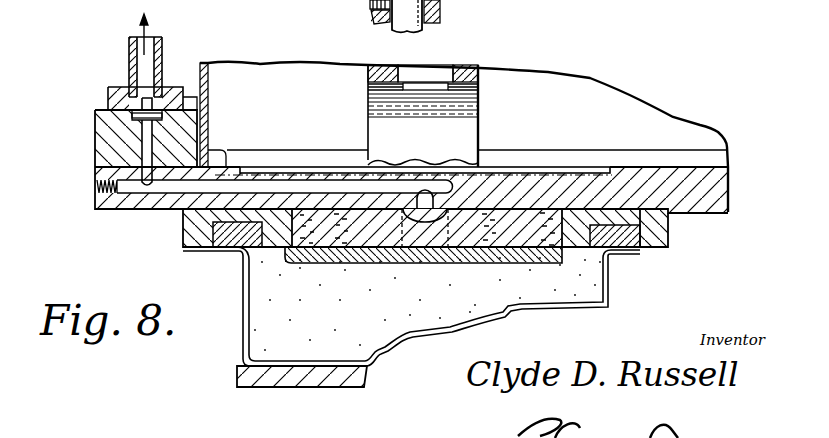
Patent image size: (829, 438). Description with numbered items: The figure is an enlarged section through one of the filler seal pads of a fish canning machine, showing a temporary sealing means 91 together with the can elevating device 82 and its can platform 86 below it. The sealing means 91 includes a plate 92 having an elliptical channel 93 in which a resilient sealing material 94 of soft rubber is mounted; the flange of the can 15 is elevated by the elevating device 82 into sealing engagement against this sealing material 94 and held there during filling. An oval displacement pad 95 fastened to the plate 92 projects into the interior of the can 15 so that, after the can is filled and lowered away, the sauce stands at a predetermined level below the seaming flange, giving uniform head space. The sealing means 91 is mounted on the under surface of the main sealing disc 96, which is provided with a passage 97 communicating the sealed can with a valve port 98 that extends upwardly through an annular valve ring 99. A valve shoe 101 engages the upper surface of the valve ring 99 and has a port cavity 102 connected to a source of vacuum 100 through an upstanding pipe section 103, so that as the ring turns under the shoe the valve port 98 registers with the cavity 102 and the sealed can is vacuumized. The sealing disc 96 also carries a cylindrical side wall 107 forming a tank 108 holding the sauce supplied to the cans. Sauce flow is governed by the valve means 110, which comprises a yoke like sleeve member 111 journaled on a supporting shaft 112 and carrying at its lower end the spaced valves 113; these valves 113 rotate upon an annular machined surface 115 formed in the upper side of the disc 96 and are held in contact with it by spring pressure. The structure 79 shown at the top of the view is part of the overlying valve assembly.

The container 15 is at (243, 288).
The upper assembly 79 is at (494, 0).
The can elevating device 82 is at (264, 388).
The can platform 86 is at (240, 372).
The temporary sealing means 91 is at (183, 246).
The plate 92 is at (665, 233).
The elliptical channel 93 is at (668, 250).
The resilient sealing material 94 is at (622, 248).
The oval displacement pad 95 is at (368, 263).
The main sealing disc 96 is at (722, 195).
The passage 97 is at (176, 190).
The valve port 98 is at (143, 127).
The annular valve ring 99 is at (97, 154).
The source of vacuum 100 is at (148, 27).
The valve shoe 101 is at (108, 88).
The port cavity 102 is at (137, 106).
The pipe section 103 is at (128, 63).
The cylindrical side wall 107 is at (212, 85).
The tank 108 is at (664, 126).
The valve means 110 is at (482, 127).
The sleeve member 111 is at (497, 65).
The supporting shaft 112 is at (434, 68).
The valves 113 is at (377, 152).
The annular machined surface 115 is at (565, 172).